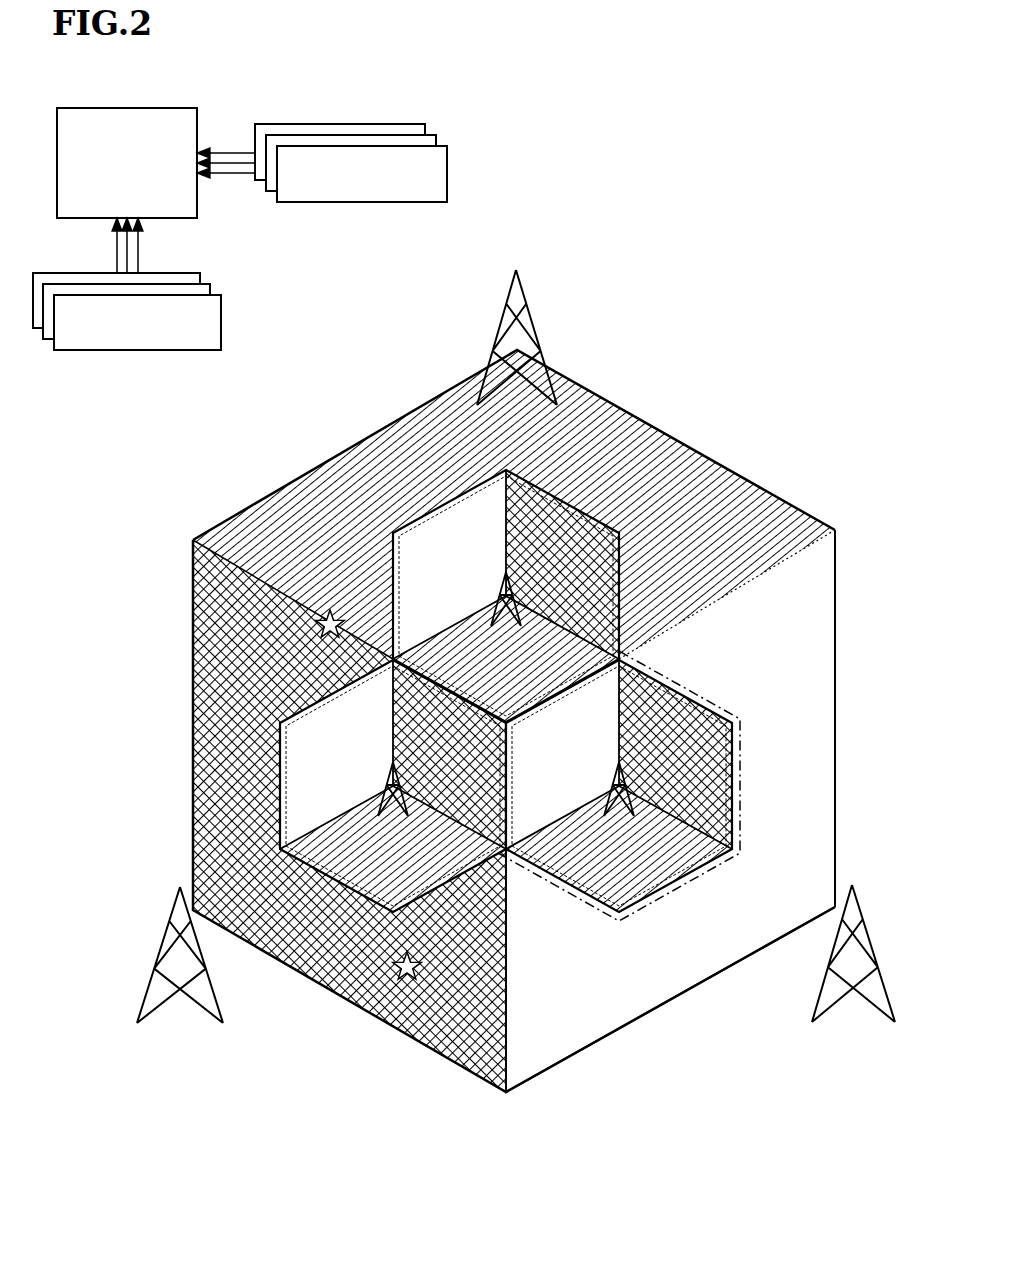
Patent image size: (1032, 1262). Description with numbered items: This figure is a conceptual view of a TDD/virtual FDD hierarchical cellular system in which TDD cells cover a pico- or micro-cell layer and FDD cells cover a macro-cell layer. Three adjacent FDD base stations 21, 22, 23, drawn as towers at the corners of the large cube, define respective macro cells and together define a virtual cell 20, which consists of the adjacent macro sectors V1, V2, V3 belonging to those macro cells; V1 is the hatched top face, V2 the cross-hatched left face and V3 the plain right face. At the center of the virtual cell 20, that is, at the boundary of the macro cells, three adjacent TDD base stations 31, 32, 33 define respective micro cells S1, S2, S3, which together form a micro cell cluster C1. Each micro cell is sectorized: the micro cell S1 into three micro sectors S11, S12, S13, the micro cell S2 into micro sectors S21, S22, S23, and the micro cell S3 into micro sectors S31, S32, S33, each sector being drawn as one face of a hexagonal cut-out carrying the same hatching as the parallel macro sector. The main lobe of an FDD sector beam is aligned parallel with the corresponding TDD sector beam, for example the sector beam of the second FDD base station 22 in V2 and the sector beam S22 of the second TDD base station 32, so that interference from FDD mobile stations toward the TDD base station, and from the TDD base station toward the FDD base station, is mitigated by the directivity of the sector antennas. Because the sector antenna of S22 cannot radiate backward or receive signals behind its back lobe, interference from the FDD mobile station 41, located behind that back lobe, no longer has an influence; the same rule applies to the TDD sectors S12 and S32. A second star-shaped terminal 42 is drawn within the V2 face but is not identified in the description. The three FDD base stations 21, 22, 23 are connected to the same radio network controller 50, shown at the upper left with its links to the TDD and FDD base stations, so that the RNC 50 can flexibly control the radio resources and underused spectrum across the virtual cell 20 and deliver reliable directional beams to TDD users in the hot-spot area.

The radio network controller 50 is at (195, 218).
The virtual cell 20 is at (835, 590).
The FDD base station 21 is at (535, 329).
The FDD base station 22 is at (207, 1013).
The FDD base station 23 is at (878, 1010).
The TDD base station 31 is at (500, 586).
The TDD base station 32 is at (390, 793).
The TDD base station 33 is at (624, 786).
The FDD mobile station 41 is at (407, 983).
The mobile station 42 is at (318, 622).
The micro cell S1 is at (622, 553).
The micro cell S2 is at (347, 888).
The micro cell S3 is at (712, 706).
The micro cell cluster C1 is at (650, 903).
The macro sector V1 is at (627, 481).
The macro sector V2 is at (263, 680).
The macro sector V3 is at (795, 900).
The micro sector S11 is at (484, 679).
The micro sector S12 is at (543, 571).
The micro sector S13 is at (424, 571).
The micro sector S21 is at (373, 868).
The micro sector S22 is at (433, 759).
The micro sector S23 is at (314, 759).
The micro sector S31 is at (601, 868).
The micro sector S32 is at (657, 759).
The micro sector S33 is at (544, 759).